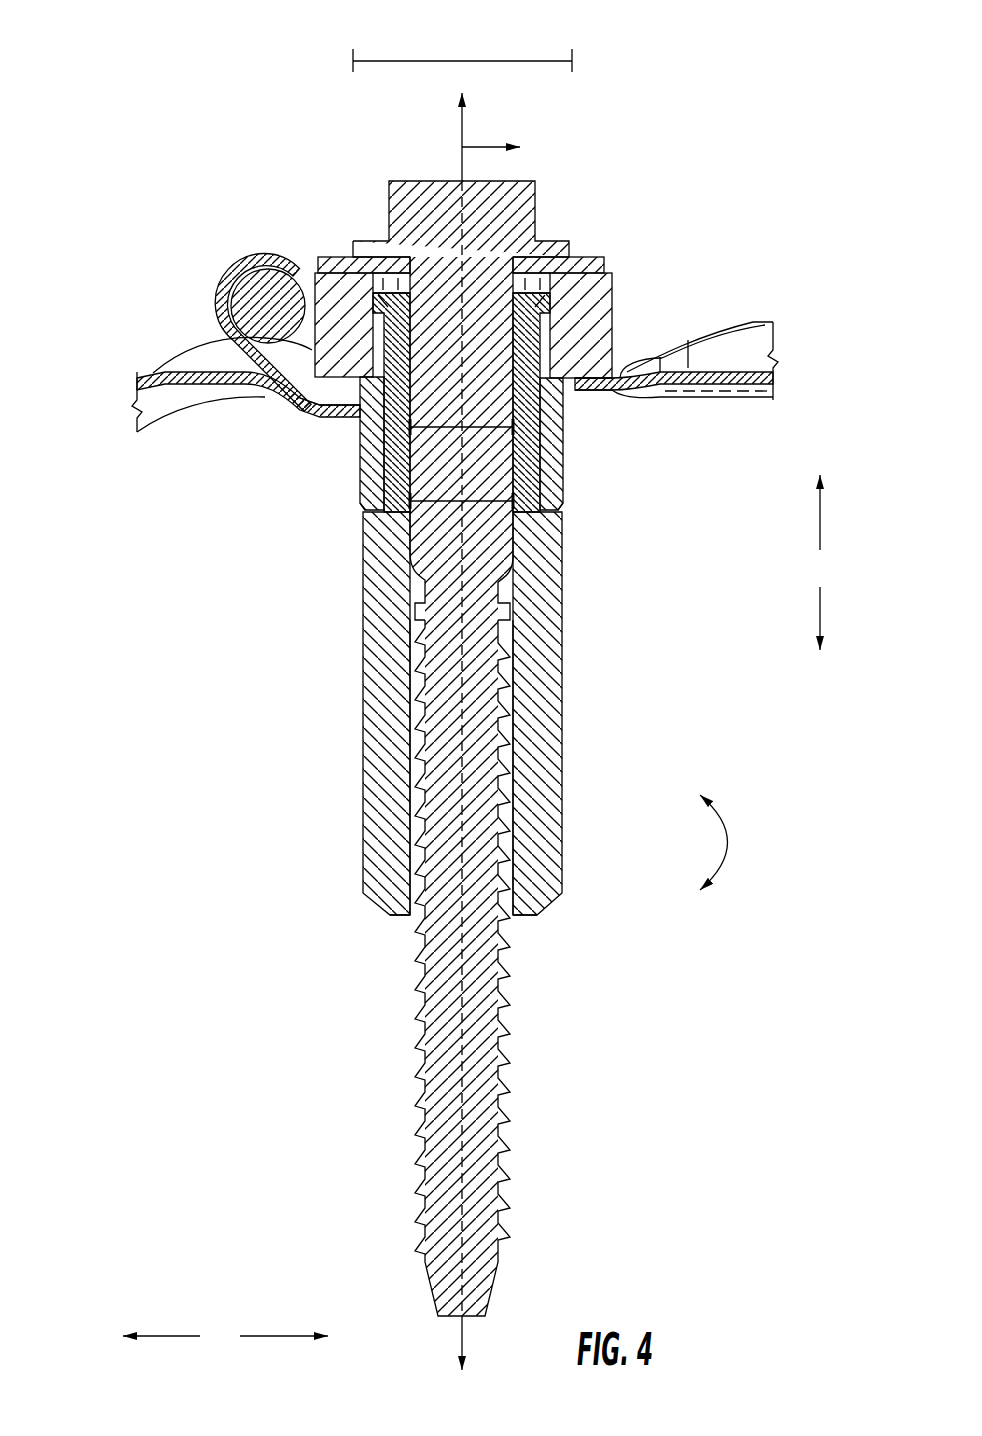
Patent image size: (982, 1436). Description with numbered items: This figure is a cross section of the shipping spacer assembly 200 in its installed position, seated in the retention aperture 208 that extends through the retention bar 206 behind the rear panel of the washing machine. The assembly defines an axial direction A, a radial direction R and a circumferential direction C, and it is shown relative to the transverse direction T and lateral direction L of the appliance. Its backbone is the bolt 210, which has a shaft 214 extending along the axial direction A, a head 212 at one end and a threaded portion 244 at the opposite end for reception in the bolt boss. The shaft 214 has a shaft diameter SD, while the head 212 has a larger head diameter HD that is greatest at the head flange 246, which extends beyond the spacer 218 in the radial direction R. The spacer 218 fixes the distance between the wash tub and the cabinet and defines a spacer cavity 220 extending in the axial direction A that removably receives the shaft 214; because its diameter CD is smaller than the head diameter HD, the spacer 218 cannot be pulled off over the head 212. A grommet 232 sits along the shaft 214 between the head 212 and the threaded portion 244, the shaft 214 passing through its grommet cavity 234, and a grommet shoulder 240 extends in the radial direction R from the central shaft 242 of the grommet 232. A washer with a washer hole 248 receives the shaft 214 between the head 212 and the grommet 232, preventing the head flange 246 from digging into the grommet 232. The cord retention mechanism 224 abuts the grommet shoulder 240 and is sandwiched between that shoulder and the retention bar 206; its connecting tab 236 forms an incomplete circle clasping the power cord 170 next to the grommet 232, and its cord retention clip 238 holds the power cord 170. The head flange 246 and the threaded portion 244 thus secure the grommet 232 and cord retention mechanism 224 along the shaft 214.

The shipping spacer assembly 200 is at (215, 873).
The retention bar 206 is at (177, 363).
The power cord 170 is at (247, 298).
The cord retention clip 238 is at (270, 258).
The cord retention mechanism 224 is at (322, 402).
The retention aperture 208 is at (378, 420).
The bolt 210 is at (502, 890).
The head 212 is at (512, 181).
The shaft 214 is at (413, 547).
The spacer 218 is at (562, 742).
The spacer cavity 220 is at (513, 587).
The grommet 232 is at (565, 474).
The grommet cavity 234 is at (512, 285).
The connecting tab 236 is at (615, 390).
The grommet shoulder 240 is at (580, 384).
The central shaft 242 is at (563, 497).
The threaded portion 244 is at (510, 1090).
The head flange 246 is at (550, 241).
The washer hole 248 is at (412, 262).
The head diameter HD is at (377, 60).
The spacer cavity diameter CD is at (482, 420).
The shaft diameter SD is at (482, 495).
The axial direction A is at (462, 133).
The radial direction R is at (487, 147).
The circumferential direction C is at (745, 843).
The transverse direction T is at (820, 562).
The lateral direction L is at (225, 1336).